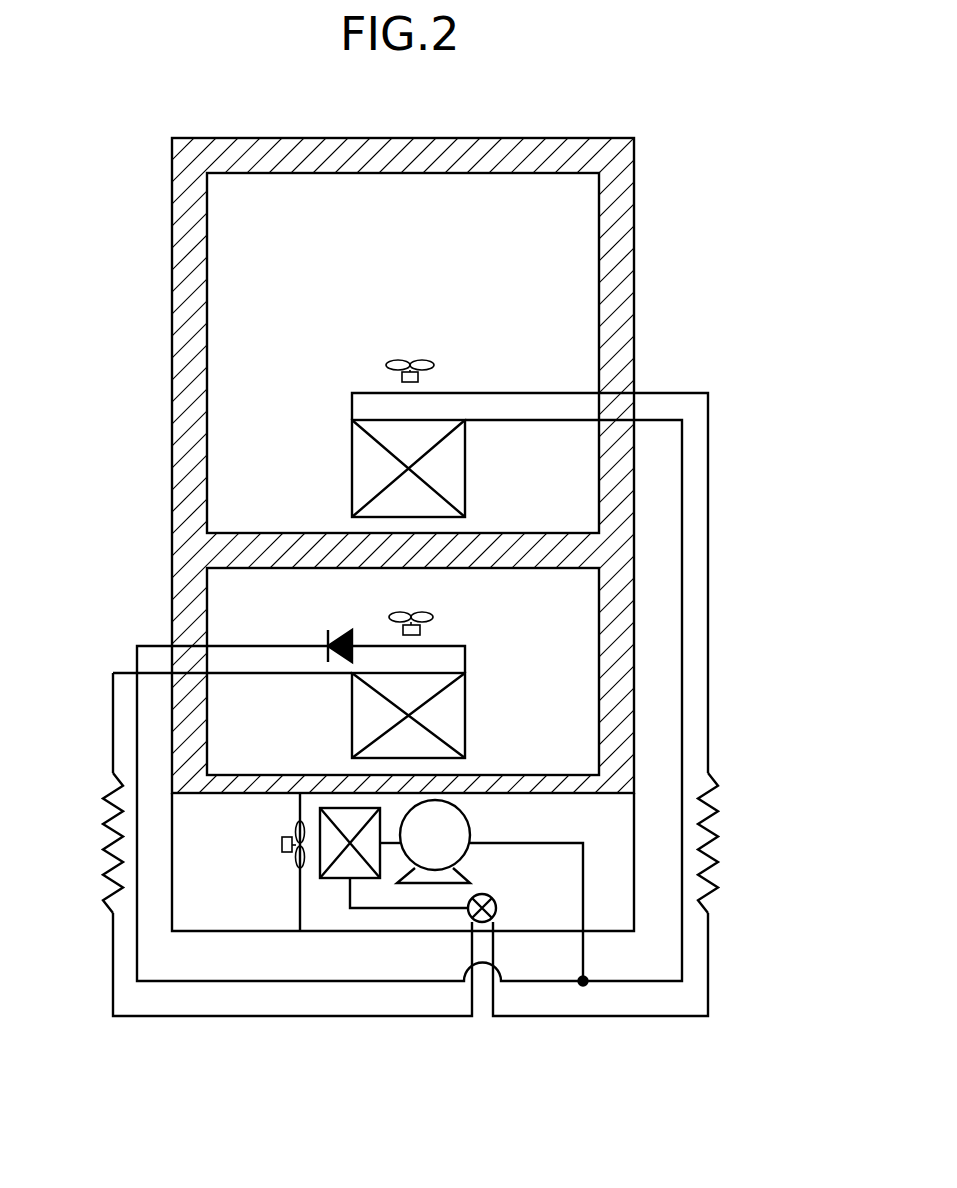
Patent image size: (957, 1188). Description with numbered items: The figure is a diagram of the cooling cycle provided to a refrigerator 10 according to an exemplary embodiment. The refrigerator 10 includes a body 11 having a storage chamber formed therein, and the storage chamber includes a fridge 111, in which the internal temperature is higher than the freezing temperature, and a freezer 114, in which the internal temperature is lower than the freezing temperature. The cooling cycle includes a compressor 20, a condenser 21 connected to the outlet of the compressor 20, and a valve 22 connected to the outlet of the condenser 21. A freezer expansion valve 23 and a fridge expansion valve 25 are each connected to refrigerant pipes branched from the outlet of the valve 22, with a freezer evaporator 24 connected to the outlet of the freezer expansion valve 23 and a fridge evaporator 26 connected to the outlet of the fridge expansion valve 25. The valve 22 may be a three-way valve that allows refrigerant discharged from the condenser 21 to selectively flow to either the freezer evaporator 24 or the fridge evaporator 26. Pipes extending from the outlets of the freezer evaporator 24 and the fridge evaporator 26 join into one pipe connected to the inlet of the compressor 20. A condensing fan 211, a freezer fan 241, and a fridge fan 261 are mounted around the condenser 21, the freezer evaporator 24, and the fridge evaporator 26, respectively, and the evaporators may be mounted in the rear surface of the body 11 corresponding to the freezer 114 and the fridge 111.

The refrigerator 10 is at (527, 97).
The body 11 is at (634, 211).
The fridge 111 is at (490, 288).
The freezer 114 is at (558, 626).
The compressor 20 is at (456, 821).
The condenser 21 is at (337, 880).
The condensing fan 211 is at (296, 830).
The valve 22 is at (495, 898).
The freezer expansion valve 23 is at (103, 838).
The freezer evaporator 24 is at (465, 716).
The freezer fan 241 is at (400, 612).
The fridge expansion valve 25 is at (721, 852).
The fridge evaporator 26 is at (465, 468).
The fridge fan 261 is at (396, 359).